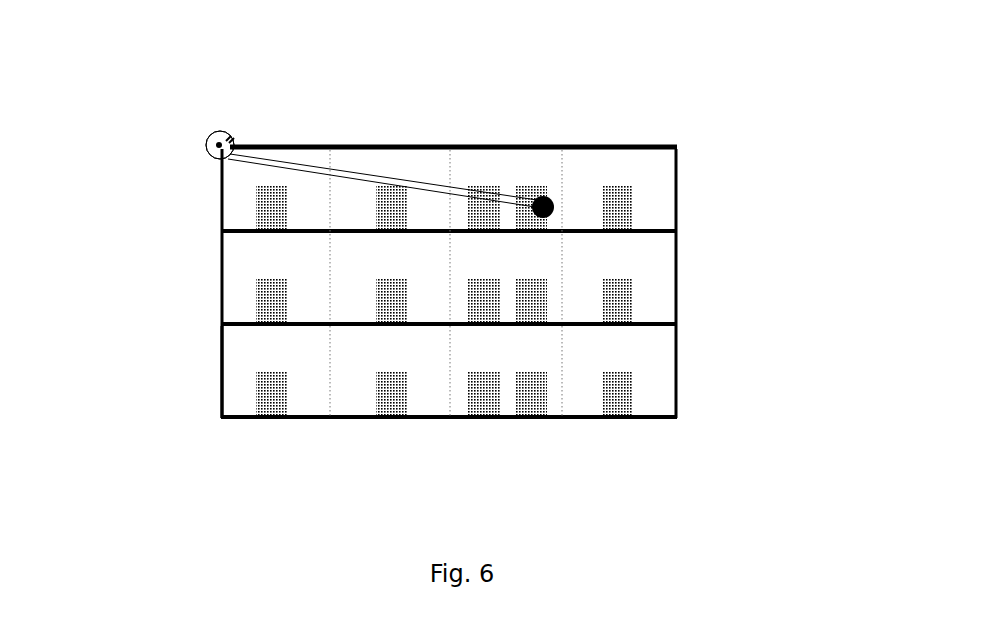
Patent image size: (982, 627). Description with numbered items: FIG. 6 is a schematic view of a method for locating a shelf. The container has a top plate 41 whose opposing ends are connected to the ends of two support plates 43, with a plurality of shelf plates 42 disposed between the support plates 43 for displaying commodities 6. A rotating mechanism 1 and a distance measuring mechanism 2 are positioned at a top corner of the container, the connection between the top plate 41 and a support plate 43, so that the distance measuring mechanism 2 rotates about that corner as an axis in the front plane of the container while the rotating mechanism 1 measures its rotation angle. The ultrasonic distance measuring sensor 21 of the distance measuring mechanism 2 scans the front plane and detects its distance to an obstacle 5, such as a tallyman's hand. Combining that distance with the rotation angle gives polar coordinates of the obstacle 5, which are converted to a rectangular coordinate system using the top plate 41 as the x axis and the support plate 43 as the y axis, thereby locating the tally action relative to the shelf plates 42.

The rotating mechanism 1 is at (265, 91).
The distance measuring mechanism 2 is at (166, 122).
The ultrasonic distance measuring sensor 21 is at (152, 177).
The top plate 41 is at (453, 99).
The shelf plates 42 is at (532, 353).
The support plates 43 is at (151, 372).
The obstacle 5 is at (638, 145).
The commodities 6 is at (454, 447).